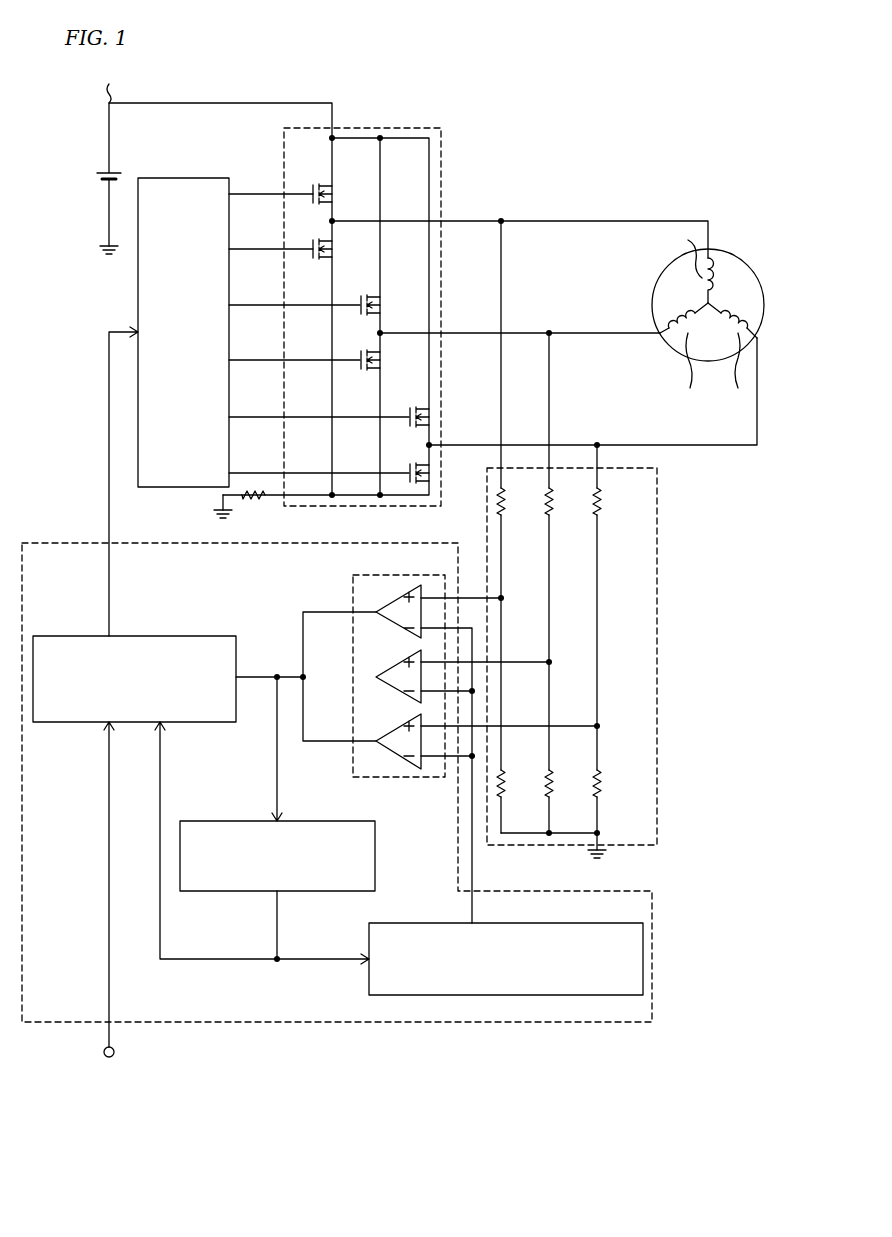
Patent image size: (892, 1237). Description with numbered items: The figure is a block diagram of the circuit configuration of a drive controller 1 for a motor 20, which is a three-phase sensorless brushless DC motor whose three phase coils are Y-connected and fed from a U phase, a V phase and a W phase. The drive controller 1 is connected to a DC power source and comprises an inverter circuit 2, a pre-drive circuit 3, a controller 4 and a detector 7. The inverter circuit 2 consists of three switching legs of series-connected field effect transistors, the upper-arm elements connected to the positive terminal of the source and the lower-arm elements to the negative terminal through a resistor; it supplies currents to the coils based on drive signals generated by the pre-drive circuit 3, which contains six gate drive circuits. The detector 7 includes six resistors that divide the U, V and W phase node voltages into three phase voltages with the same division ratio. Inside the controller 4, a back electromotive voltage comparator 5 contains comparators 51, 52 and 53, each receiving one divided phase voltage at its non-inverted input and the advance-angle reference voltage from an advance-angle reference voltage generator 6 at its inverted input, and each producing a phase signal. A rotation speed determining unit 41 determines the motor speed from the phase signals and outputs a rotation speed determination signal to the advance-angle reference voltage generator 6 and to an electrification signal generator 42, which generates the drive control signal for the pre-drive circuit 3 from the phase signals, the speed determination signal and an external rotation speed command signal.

The drive controller 1 is at (500, 126).
The inverter circuit 2 is at (403, 127).
The pre-drive circuit 3 is at (187, 178).
The controller 4 is at (302, 1023).
The back electromotive voltage comparator 5 is at (410, 565).
The advance-angle reference voltage generator 6 is at (565, 923).
The detector 7 is at (658, 582).
The motor 20 is at (735, 255).
The rotation speed determining unit 41 is at (325, 821).
The electrification signal generator 42 is at (182, 636).
The comparator 51 is at (392, 597).
The comparator 52 is at (392, 662).
The comparator 53 is at (392, 726).